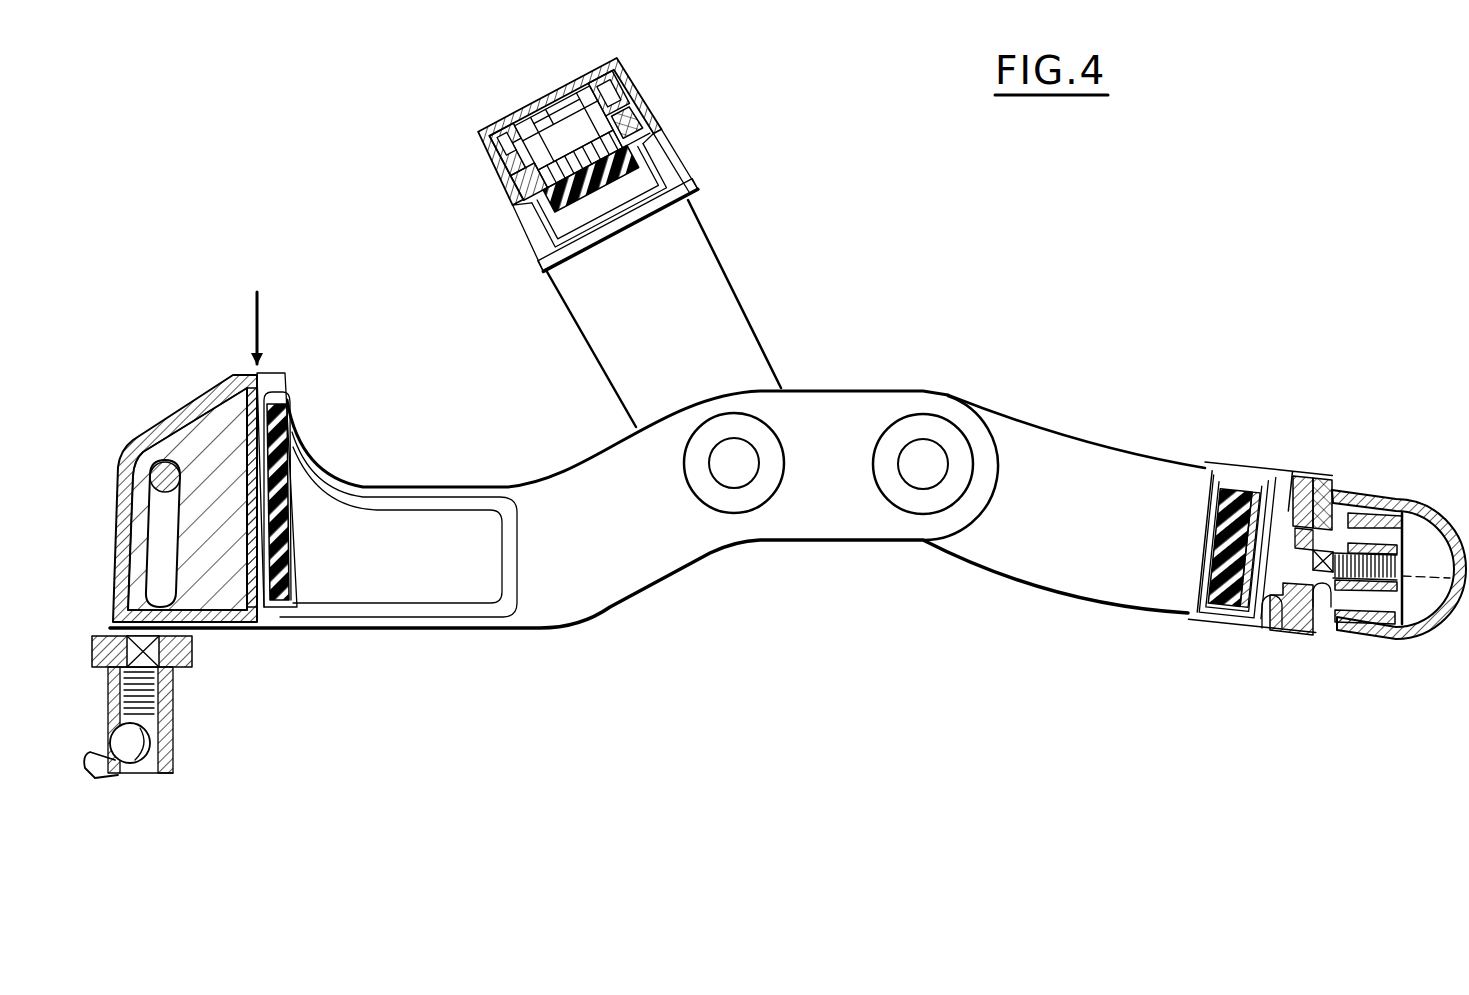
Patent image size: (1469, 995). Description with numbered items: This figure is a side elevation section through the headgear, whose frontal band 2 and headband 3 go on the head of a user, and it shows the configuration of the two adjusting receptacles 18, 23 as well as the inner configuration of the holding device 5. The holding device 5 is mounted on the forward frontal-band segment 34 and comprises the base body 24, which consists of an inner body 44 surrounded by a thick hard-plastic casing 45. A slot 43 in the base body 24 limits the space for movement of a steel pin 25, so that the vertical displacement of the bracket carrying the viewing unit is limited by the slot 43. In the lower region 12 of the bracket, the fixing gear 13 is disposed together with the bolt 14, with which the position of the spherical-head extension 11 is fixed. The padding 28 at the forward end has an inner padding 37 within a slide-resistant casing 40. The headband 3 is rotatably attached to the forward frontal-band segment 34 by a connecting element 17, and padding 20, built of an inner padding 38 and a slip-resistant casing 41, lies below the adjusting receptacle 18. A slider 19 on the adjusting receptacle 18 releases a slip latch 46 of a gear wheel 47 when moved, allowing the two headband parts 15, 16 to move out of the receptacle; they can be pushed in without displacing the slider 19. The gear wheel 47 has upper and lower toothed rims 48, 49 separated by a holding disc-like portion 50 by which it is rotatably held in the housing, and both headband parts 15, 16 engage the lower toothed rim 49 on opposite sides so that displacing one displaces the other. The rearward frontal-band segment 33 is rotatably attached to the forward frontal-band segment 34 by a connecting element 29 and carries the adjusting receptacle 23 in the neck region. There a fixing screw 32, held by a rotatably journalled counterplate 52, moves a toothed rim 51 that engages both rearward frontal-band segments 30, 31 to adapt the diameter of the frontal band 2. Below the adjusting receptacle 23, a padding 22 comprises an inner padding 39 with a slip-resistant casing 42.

The frontal band 2 is at (565, 488).
The headband 3 is at (702, 264).
The holding device 5 is at (112, 428).
The spherical-head extension 11 is at (120, 780).
The lower region 12 is at (175, 722).
The fixing gear 13 is at (192, 650).
The bolt 14 is at (175, 700).
The headband part 15 is at (727, 314).
The headband part 16 is at (648, 120).
The connecting element 17 is at (735, 490).
The adjusting receptacle 18 is at (672, 142).
The slider 19 is at (515, 124).
The padding 20 is at (546, 272).
The padding 22 is at (1200, 505).
The adjusting receptacle 23 is at (1278, 480).
The base body 24 is at (258, 310).
The steel pin 25 is at (160, 462).
The padding 28 is at (385, 585).
The connecting element 29 is at (916, 495).
The rearward frontal-band segment 30 is at (1090, 563).
The rearward frontal-band segment 31 is at (1325, 482).
The fixing screw 32 is at (1395, 494).
The rearward frontal-band segment 33 is at (1014, 558).
The forward frontal-band segment 34 is at (290, 385).
The inner padding 37 is at (300, 444).
The inner padding 38 is at (576, 228).
The inner padding 39 is at (1238, 480).
The slide-resistant casing 40 is at (441, 515).
The slip-resistant casing 41 is at (668, 202).
The slip-resistant casing 42 is at (1205, 610).
The slot 43 is at (158, 540).
The inner body 44 is at (222, 428).
The hard-plastic casing 45 is at (268, 376).
The slip latch 46 is at (630, 94).
The gear wheel 47 is at (568, 87).
The upper toothed rim 48 is at (530, 122).
The lower toothed rim 49 is at (540, 210).
The holding disc-like portion 50 is at (525, 177).
The toothed rim 51 is at (1340, 612).
The counterplate 52 is at (1270, 610).